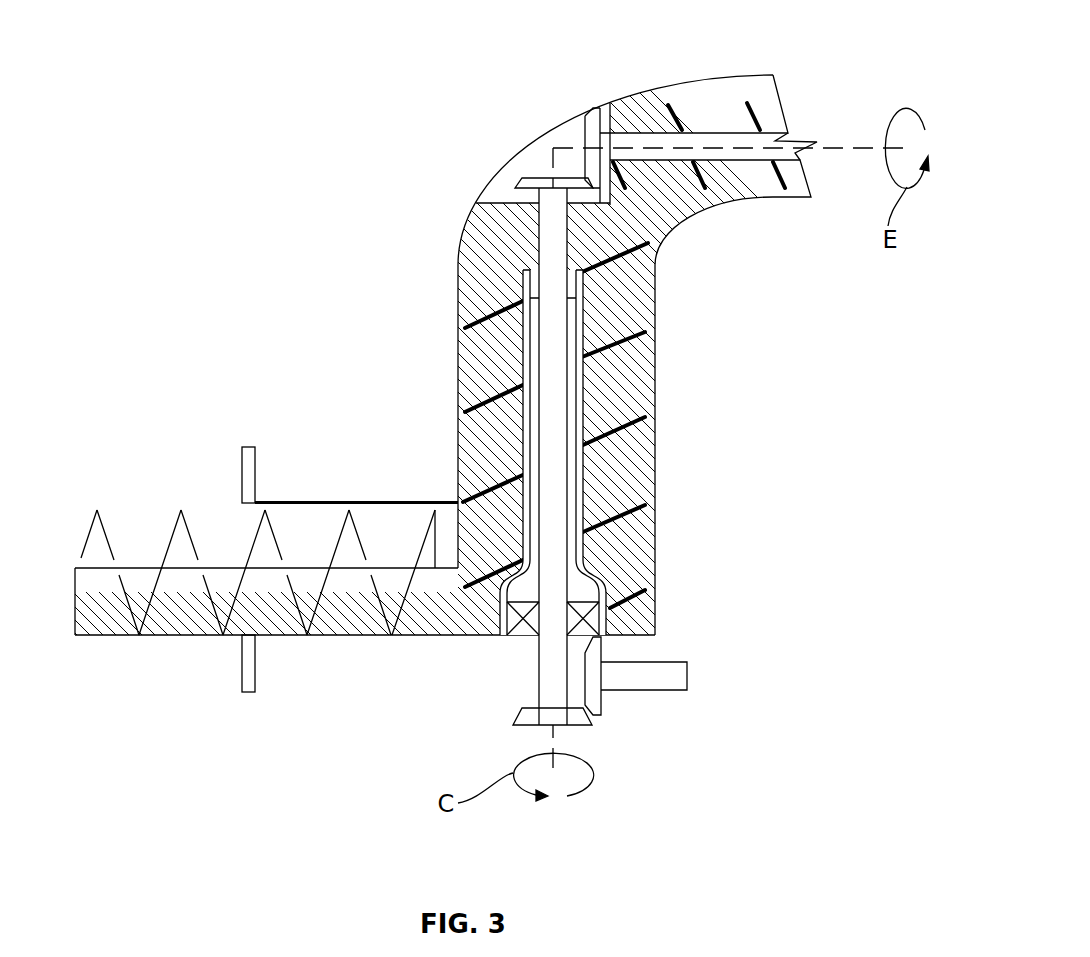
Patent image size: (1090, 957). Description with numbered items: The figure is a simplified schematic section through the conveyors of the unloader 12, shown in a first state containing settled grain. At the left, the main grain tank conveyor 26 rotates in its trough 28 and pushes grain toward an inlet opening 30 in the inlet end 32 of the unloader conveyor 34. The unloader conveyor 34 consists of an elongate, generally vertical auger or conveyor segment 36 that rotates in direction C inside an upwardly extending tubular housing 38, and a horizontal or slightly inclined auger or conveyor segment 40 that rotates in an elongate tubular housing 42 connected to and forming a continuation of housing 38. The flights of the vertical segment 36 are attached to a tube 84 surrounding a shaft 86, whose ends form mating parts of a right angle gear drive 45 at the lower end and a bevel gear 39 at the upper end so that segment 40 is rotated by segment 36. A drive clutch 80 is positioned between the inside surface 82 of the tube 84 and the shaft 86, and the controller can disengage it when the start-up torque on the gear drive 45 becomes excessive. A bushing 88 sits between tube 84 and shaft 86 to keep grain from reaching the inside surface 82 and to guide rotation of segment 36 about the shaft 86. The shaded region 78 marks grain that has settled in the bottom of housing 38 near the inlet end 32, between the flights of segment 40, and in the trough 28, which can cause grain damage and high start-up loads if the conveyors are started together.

The unloader 12 is at (286, 392).
The main grain tank conveyor 26 is at (89, 519).
The trough 28 is at (90, 635).
The inlet opening 30 is at (228, 523).
The inlet end 32 is at (316, 502).
The unloader conveyor 34 is at (658, 417).
The vertical auger conveyor segment 36 is at (637, 340).
The upwardly extending tubular housing 38 is at (655, 453).
The bevel gear 39 is at (528, 122).
The horizontal auger conveyor segment 40 is at (753, 110).
The elongate tubular housing 42 is at (674, 83).
The right angle gear drive 45 is at (600, 725).
The shaded region of settled grain 78 is at (647, 540).
The drive clutch 80 is at (593, 618).
The inside surface of tube 82 is at (573, 318).
The tube 84 is at (587, 382).
The shaft 86 is at (538, 672).
The bushing 88 is at (533, 272).